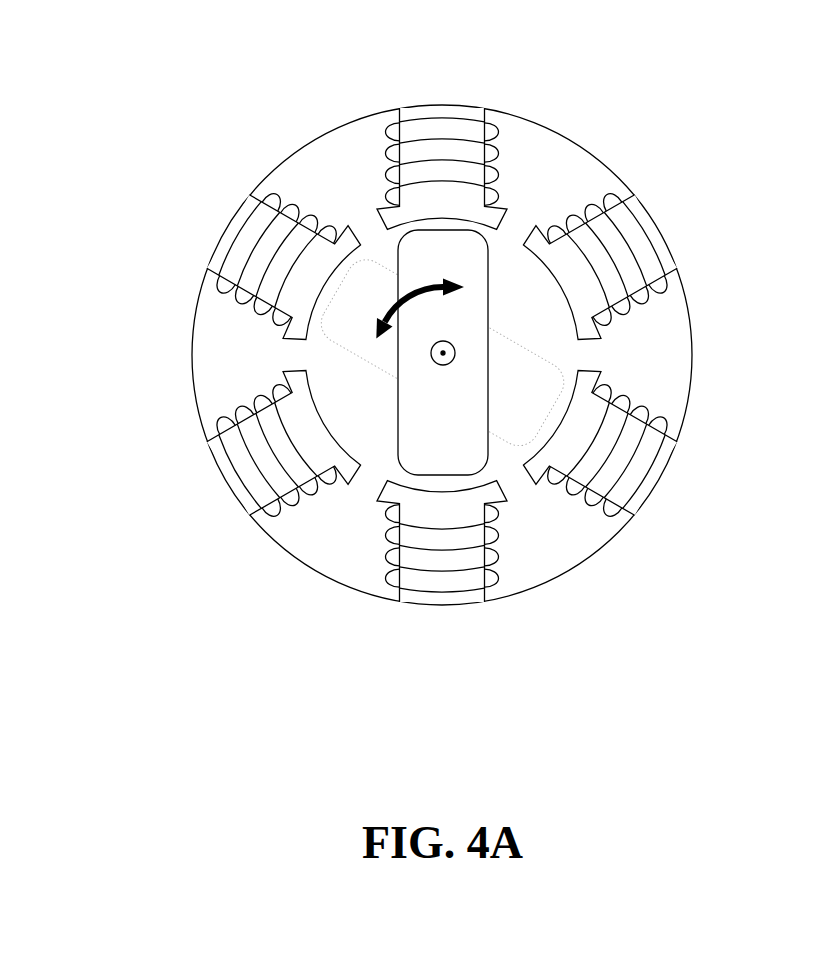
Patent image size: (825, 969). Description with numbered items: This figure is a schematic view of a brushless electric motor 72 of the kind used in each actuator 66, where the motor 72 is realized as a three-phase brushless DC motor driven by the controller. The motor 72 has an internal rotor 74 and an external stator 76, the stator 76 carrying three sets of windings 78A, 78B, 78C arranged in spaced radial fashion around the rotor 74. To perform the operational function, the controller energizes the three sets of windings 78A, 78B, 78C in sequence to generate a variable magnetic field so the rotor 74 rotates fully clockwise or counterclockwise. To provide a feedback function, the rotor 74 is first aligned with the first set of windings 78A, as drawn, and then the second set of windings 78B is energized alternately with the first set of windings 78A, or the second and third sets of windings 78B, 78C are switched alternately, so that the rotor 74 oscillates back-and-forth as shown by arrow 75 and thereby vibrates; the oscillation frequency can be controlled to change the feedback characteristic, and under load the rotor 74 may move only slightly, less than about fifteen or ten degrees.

The actuator 66 is at (437, 350).
The motor 72 is at (563, 131).
The rotor 74 is at (449, 369).
The arrow 75 is at (464, 290).
The stator 76 is at (660, 238).
The first set of windings 78A is at (430, 112).
The second set of windings 78B is at (220, 285).
The third set of windings 78C is at (620, 200).